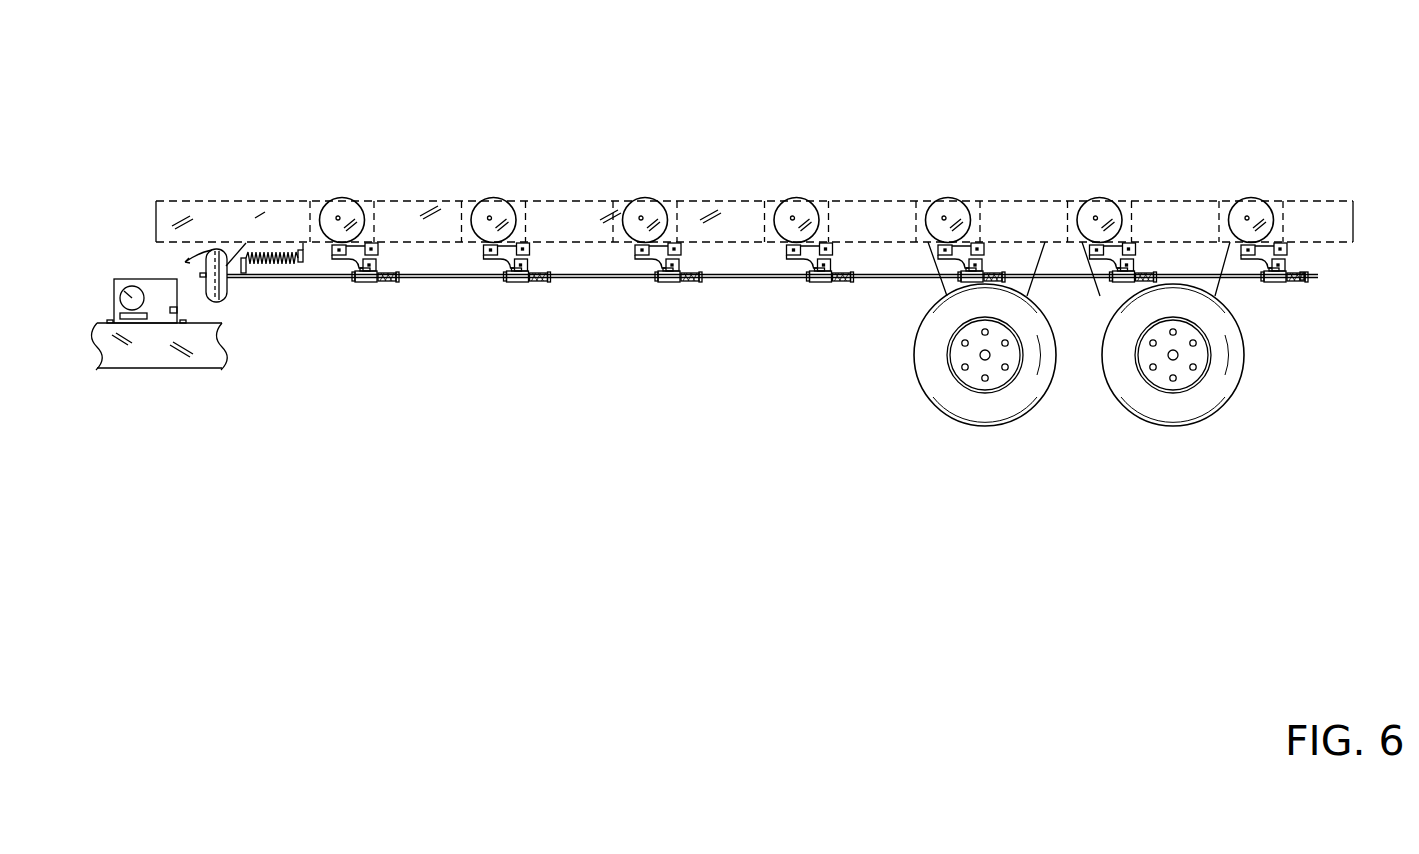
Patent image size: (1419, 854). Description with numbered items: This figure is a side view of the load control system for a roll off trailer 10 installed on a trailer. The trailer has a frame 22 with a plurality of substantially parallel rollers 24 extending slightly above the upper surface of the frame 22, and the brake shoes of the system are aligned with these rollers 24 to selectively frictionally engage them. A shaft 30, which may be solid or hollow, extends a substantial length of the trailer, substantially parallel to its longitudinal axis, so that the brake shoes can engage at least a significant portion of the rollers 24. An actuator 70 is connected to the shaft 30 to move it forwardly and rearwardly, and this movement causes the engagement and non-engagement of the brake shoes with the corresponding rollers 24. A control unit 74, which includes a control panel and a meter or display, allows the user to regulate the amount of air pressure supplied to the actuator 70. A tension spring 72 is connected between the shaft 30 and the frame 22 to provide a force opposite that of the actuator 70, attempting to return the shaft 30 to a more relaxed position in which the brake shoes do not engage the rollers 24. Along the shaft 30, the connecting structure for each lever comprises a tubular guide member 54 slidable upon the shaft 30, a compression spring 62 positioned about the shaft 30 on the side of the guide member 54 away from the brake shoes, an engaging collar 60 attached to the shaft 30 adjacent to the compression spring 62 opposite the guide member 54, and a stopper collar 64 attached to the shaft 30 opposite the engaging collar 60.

The load control system 10 is at (563, 198).
The frame 22 is at (718, 200).
The rollers 24 is at (496, 198).
The shaft 30 is at (570, 279).
The guide member 54 is at (677, 283).
The engaging collar 60 is at (704, 283).
The stopper collar 64 is at (814, 283).
The compression spring 62 is at (847, 283).
The actuator 70 is at (226, 290).
The tension spring 72 is at (277, 262).
The control unit 74 is at (153, 290).